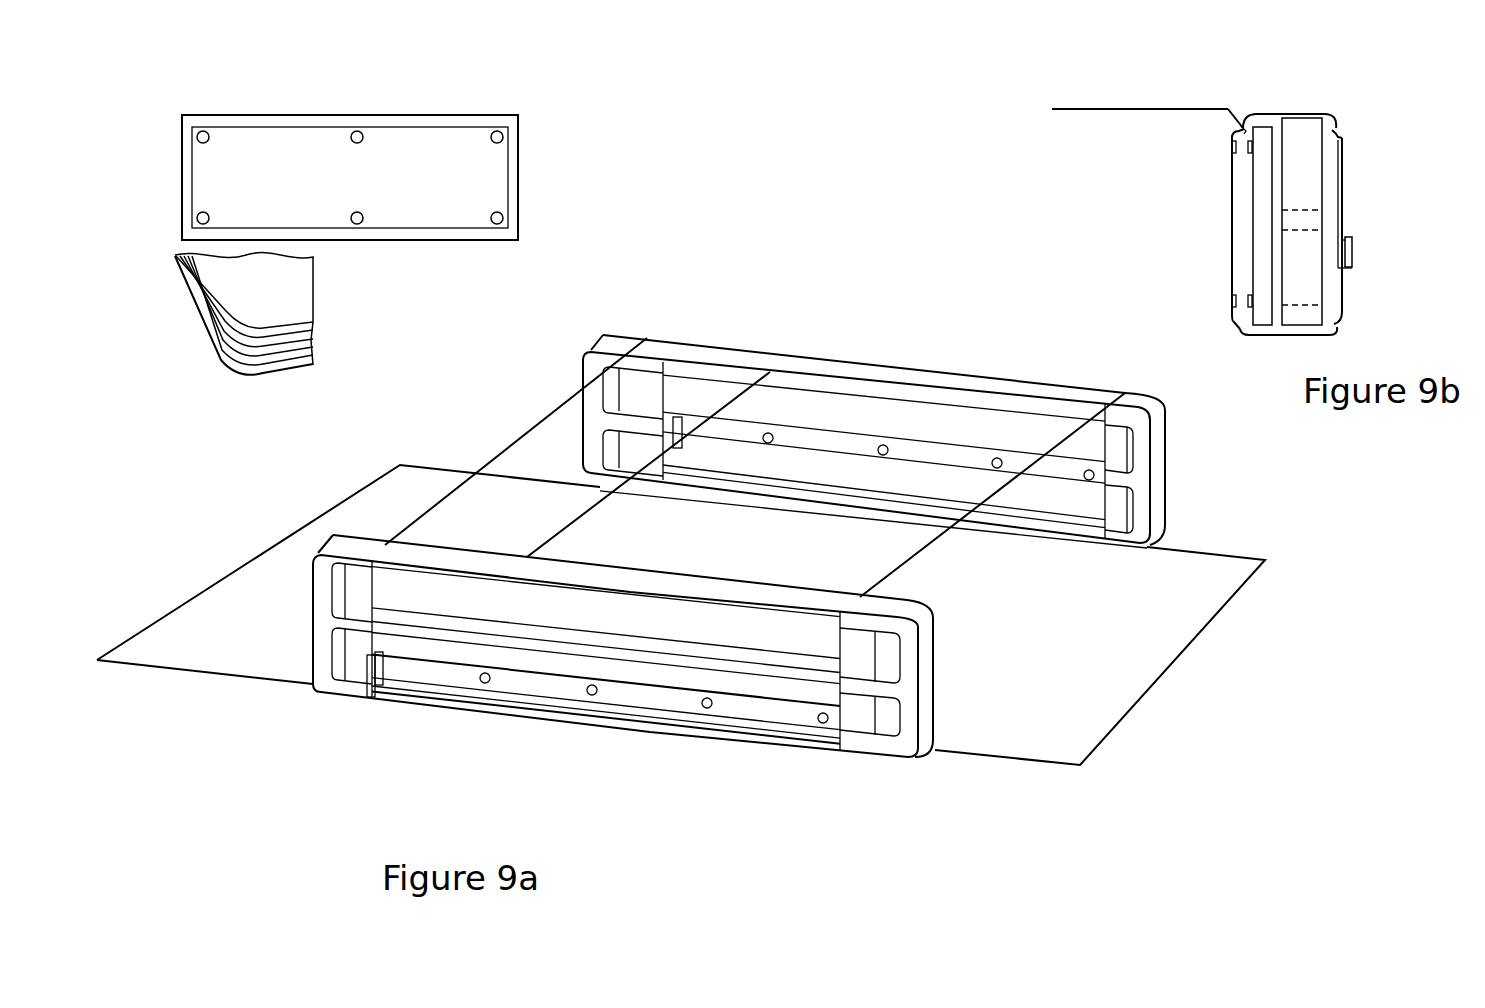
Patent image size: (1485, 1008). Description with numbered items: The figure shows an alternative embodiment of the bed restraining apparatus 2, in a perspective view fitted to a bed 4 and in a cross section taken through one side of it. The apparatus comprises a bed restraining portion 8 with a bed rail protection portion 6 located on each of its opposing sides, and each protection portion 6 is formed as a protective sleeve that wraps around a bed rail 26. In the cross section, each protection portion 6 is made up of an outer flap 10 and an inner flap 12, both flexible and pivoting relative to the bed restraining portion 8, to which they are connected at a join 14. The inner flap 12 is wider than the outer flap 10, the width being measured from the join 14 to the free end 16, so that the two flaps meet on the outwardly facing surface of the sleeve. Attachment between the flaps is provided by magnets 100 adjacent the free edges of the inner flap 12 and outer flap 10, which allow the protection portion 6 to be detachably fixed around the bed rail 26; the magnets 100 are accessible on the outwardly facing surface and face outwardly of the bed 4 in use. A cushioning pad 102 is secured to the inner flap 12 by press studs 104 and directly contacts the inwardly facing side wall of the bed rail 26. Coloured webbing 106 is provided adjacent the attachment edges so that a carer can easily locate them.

In FIG. 9A, the bed restraining apparatus 2 is at (1034, 375).
In FIG. 9A, the bed 4 is at (1050, 673).
In FIG. 9A, the bed rail protection portion 6 is at (1095, 500).
In FIG. 9B, the bed rail protection portion 6 is at (1358, 176).
In FIG. 9A, the bed restraining portion 8 is at (815, 532).
In FIG. 9B, the bed restraining portion 8 is at (1167, 108).
In FIG. 9B, the outer flap 10 is at (1317, 110).
In FIG. 9B, the inner flap 12 is at (1230, 268).
In FIG. 9B, the join 14 is at (1245, 106).
In FIG. 9B, the free end 16 is at (1369, 253).
In FIG. 9A, the bed rail 26 is at (1157, 458).
In FIG. 9B, the bed rail 26 is at (1310, 157).
In FIG. 9A, the magnets 100 is at (487, 684).
In FIG. 9B, the magnets 100 is at (1352, 242).
In FIG. 9B, the cushioning pad 102 is at (1260, 202).
In FIG. 9B, the press studs 104 is at (1233, 145).
In FIG. 9A, the coloured webbing 106 is at (375, 700).